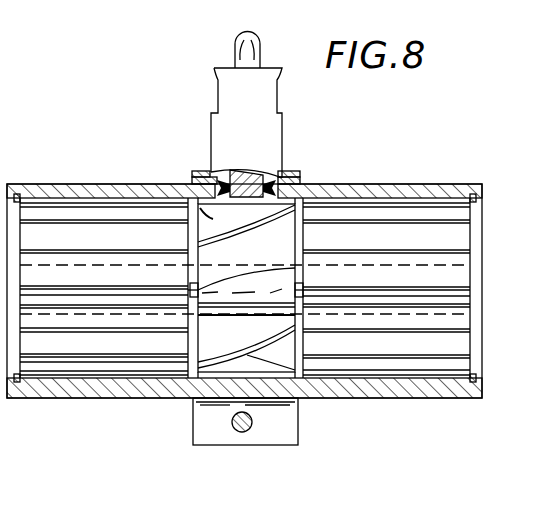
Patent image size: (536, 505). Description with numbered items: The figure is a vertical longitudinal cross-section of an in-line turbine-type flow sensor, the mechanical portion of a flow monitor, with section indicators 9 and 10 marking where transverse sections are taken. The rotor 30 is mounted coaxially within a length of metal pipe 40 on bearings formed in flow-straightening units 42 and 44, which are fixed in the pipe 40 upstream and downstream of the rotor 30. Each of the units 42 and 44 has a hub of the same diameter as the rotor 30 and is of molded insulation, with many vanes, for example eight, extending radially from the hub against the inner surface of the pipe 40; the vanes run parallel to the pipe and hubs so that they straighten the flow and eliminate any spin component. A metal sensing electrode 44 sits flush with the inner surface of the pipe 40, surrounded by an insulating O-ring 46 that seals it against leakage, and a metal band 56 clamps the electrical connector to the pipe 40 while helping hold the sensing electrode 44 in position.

The section line 9- 9 is at (162, 22).
The section line 10- 10 is at (248, 10).
The rotor 30 is at (190, 193).
The metal pipe 40 is at (343, 184).
The flow-straightening unit 42 is at (47, 232).
The flow-straightening unit 44 is at (387, 233).
The O-ring 46 is at (267, 196).
The metal band 56 is at (293, 420).